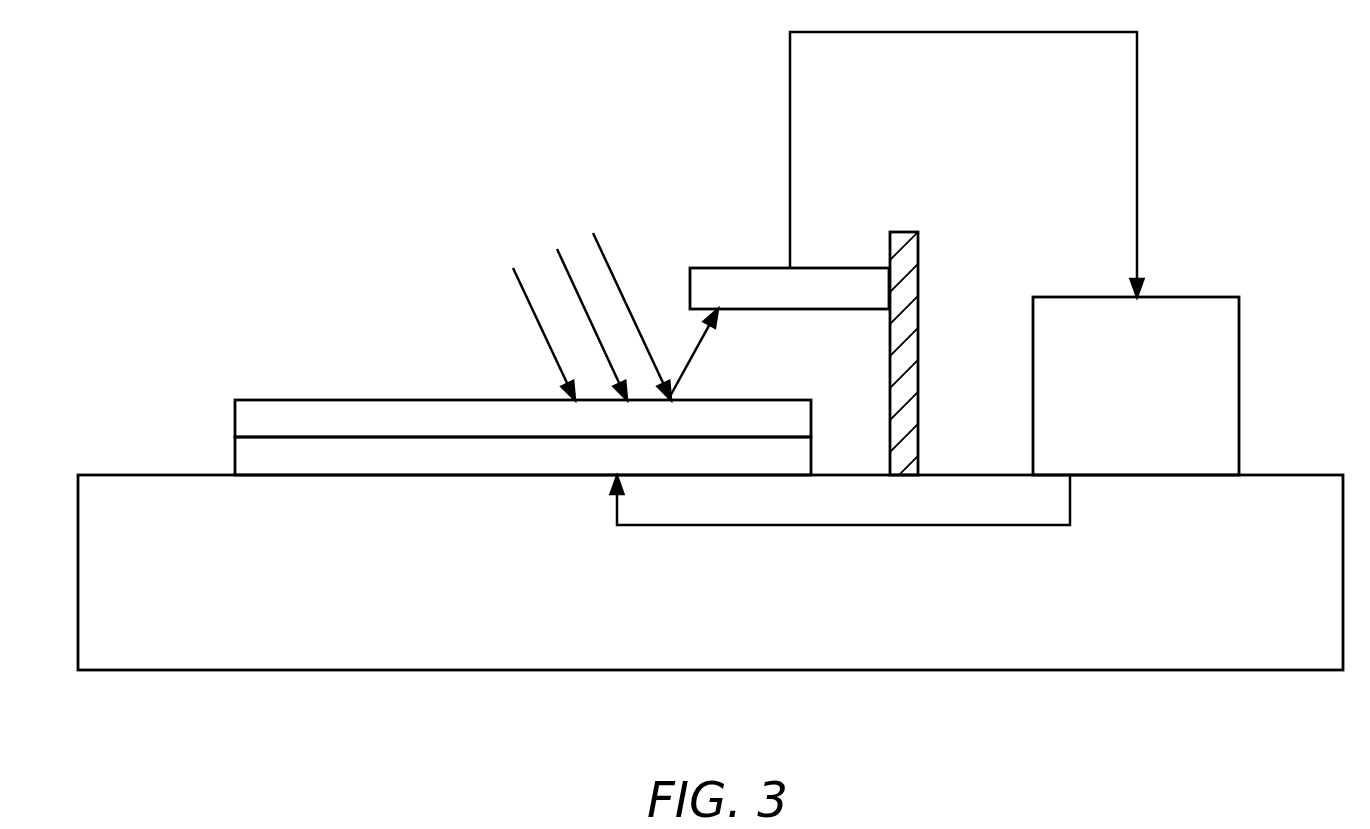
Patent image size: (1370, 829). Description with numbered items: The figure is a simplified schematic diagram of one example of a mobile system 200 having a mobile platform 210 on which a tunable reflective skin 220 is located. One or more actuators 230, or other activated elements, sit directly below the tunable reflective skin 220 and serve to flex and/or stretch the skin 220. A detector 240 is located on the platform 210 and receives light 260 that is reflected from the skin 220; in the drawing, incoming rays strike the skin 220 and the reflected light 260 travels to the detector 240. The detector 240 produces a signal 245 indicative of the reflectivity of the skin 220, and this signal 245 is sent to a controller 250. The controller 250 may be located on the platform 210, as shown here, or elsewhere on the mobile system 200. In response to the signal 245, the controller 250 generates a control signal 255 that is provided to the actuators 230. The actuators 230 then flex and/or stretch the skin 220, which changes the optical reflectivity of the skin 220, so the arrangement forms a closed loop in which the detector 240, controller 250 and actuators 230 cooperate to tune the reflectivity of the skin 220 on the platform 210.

The mobile system 200 is at (318, 197).
The mobile platform 210 is at (90, 584).
The tunable reflective skin 220 is at (241, 418).
The actuators 230 is at (241, 454).
The detector 240 is at (843, 267).
The signal 245 is at (1050, 32).
The controller 250 is at (1205, 297).
The control signal 255 is at (960, 526).
The light 260 is at (694, 353).